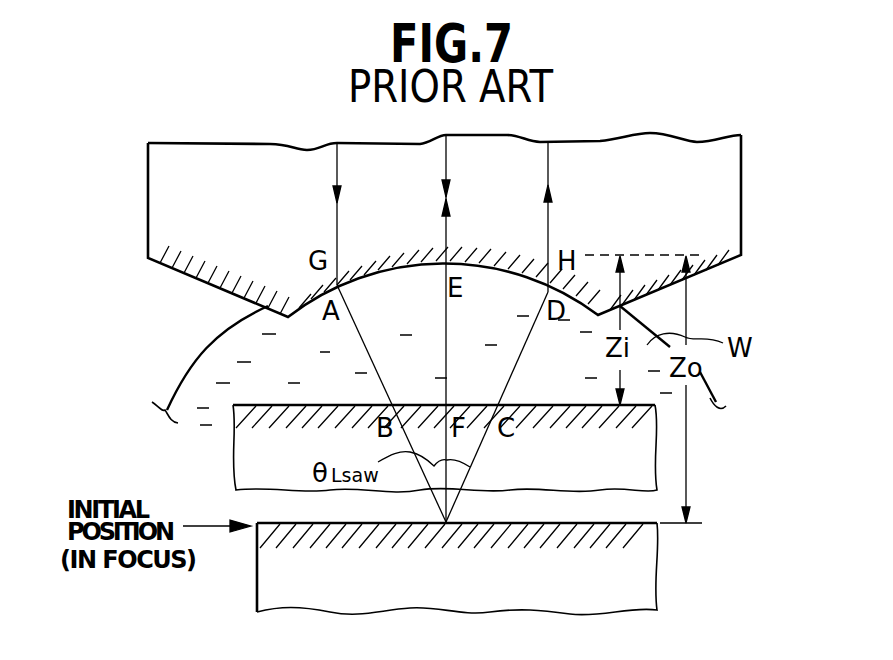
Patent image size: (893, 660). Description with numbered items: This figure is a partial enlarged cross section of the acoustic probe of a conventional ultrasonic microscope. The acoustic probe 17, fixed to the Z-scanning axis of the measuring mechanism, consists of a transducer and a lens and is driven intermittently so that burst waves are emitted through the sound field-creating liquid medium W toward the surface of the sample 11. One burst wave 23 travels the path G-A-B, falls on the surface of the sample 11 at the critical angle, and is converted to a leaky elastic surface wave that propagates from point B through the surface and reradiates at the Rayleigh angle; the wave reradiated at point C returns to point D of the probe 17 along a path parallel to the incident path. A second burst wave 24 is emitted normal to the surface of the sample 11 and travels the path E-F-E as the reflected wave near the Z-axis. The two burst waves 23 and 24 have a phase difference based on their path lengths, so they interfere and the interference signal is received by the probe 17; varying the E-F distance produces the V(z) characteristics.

The acoustic probe 17 is at (705, 213).
The burst wave 23 is at (357, 330).
The burst wave 24 is at (444, 322).
The sample 11 is at (628, 458).